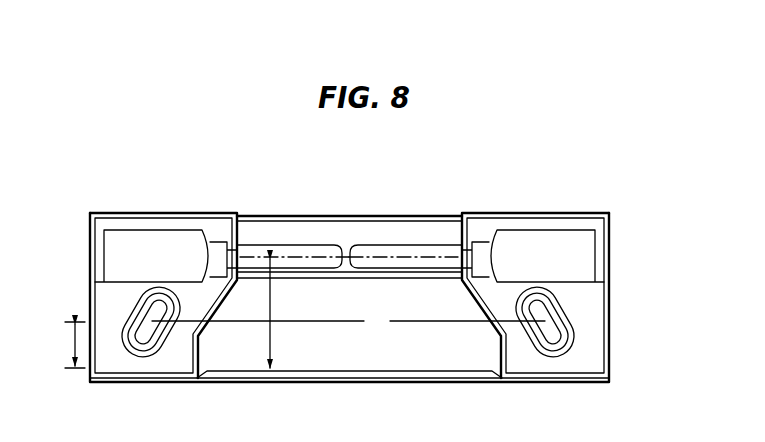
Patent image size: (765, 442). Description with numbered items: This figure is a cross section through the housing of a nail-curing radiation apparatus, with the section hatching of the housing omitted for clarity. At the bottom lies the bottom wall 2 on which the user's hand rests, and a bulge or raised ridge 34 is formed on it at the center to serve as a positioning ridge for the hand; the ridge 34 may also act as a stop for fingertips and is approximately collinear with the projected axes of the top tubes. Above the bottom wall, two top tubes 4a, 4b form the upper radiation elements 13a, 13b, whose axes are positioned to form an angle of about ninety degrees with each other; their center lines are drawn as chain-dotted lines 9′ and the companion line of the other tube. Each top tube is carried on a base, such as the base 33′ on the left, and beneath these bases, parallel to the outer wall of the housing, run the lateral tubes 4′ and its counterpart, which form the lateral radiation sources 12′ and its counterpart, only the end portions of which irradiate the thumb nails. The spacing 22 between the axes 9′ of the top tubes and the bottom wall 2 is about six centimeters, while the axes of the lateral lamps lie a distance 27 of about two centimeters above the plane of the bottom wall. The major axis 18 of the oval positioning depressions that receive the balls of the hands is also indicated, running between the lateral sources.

The bottom wall 2 is at (305, 383).
The ridge 34 is at (408, 379).
The base 33′ is at (148, 242).
The top tube 4a is at (226, 243).
The top tube 4b is at (465, 243).
The upper radiation element 13a is at (288, 250).
The upper radiation element 13b is at (380, 250).
The center line 9′ is at (310, 255).
The lateral tube 4′ is at (133, 292).
The radiation source 12′ is at (152, 318).
The major axis 18 is at (348, 319).
The spacing 22 is at (272, 315).
The distance 27 is at (72, 340).